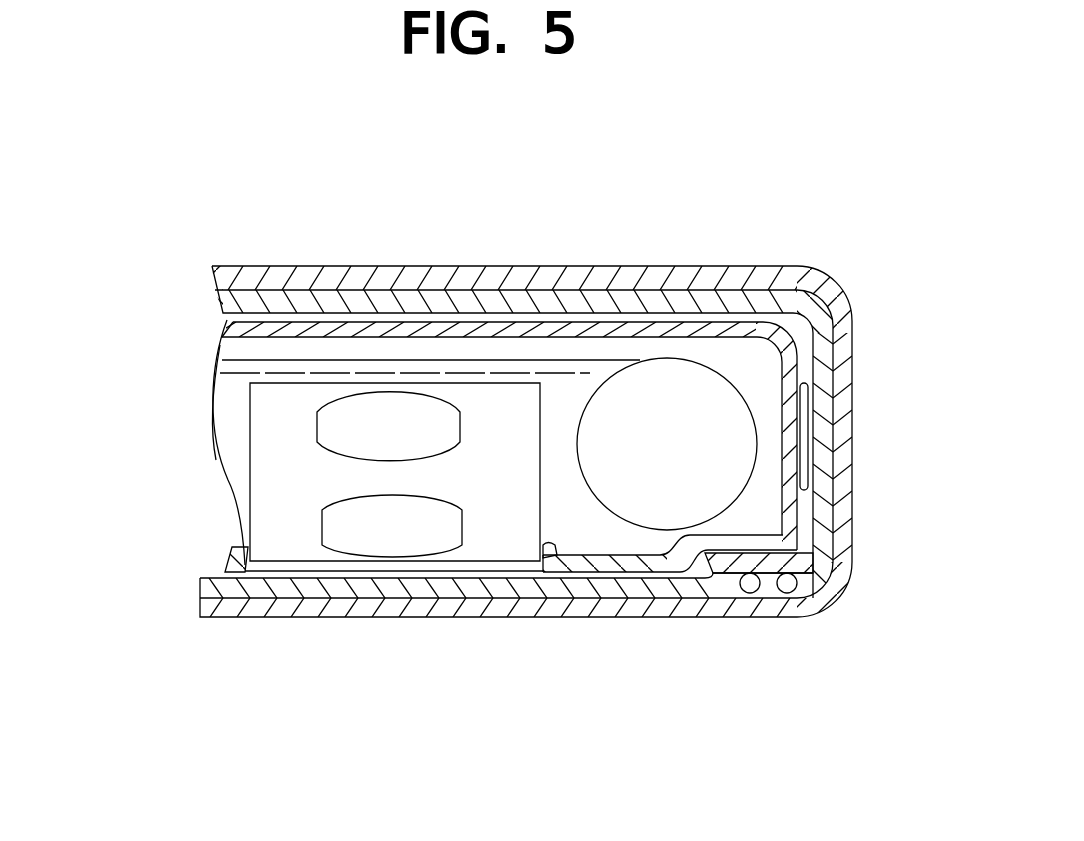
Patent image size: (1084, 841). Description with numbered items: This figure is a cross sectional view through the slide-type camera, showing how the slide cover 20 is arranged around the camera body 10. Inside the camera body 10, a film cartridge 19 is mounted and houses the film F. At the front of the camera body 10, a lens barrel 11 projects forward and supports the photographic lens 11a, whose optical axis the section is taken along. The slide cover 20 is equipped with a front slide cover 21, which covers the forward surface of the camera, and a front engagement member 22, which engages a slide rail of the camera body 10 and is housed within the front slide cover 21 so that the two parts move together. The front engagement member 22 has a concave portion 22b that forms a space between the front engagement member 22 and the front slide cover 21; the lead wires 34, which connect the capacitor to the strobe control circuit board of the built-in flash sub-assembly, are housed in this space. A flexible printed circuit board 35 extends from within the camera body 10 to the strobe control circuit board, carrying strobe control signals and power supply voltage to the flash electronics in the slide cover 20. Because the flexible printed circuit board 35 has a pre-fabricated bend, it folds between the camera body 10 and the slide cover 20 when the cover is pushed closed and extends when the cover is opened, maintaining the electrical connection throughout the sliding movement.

The slide cover 20 is at (806, 267).
The front slide cover 21 is at (702, 615).
The camera body 10 is at (800, 330).
The film F is at (555, 360).
The film cartridge 19 is at (678, 383).
The lens barrel 11 is at (533, 468).
The photographic lens 11a is at (327, 527).
The flexible printed circuit board 35 is at (810, 400).
The front engagement member 22 is at (640, 585).
The concave portion 22b is at (807, 573).
The lead wires 34 is at (750, 593).